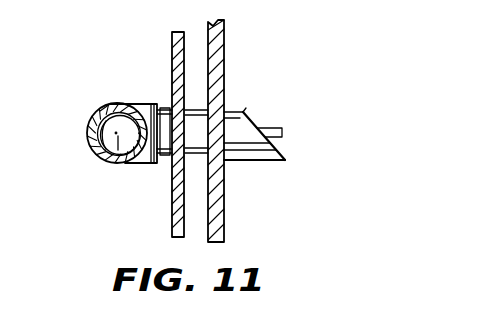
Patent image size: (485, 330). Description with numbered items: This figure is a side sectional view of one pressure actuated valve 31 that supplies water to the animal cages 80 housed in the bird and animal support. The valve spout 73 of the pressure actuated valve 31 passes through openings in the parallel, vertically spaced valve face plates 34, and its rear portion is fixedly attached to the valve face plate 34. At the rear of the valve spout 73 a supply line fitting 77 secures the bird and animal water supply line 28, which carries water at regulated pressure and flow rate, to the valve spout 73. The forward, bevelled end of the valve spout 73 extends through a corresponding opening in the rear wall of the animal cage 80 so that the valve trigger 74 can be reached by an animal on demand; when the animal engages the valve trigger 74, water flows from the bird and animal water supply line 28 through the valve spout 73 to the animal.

The bird and animal water supply line 28 is at (94, 108).
The supply line fitting 77 is at (149, 104).
The animal cages 80 is at (216, 63).
The pressure actuated valve 31 is at (247, 107).
The valve trigger 74 is at (281, 128).
The valve spout 73 is at (258, 161).
The valve face plates 34 is at (171, 180).